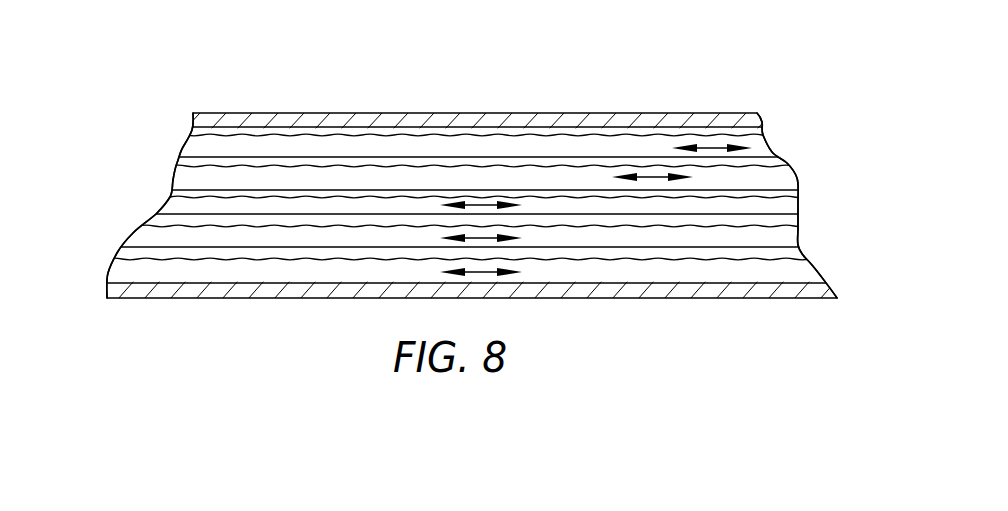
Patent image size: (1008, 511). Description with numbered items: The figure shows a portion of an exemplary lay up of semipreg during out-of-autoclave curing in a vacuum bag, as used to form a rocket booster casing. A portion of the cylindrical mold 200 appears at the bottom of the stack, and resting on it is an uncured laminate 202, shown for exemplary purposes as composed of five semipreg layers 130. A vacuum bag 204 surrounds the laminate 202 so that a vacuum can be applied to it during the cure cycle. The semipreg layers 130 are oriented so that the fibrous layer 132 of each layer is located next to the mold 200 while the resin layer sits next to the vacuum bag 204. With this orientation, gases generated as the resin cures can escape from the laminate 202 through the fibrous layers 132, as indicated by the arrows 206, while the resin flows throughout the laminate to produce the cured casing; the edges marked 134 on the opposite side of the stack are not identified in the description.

The semipreg layer 130 is at (245, 173).
The fibrous layer 132 is at (182, 178).
The second ply edges 134 is at (773, 163).
The mold 200 is at (752, 298).
The uncured laminate 202 is at (140, 197).
The vacuum bag 204 is at (467, 123).
The arrows 206 is at (482, 237).